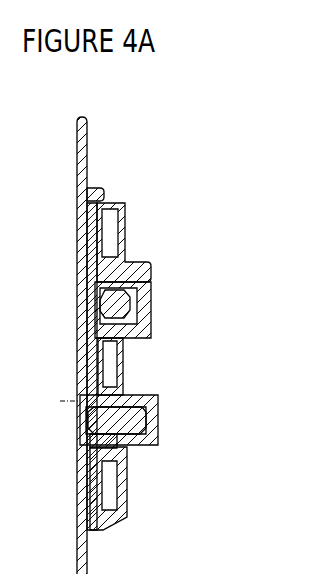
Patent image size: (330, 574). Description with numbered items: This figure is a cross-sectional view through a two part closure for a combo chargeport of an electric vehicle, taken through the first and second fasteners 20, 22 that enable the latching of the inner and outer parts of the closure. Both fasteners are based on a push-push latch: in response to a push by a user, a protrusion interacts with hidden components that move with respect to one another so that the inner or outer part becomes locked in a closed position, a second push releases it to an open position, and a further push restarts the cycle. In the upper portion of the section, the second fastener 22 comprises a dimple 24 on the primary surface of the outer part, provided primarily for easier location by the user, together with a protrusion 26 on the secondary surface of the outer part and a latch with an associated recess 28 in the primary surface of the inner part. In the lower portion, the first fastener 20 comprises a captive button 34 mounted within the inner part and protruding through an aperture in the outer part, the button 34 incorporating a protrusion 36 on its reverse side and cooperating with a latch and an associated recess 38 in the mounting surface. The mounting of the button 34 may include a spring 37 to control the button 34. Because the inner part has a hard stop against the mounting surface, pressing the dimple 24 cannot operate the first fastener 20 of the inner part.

The first fastener 20 is at (190, 445).
The second fastener 22 is at (197, 299).
The dimple 24 is at (145, 272).
The protrusion 26 is at (103, 303).
The recess 28 is at (130, 318).
The captive button 34 is at (153, 402).
The protrusion 36 is at (135, 423).
The spring 37 is at (157, 486).
The recess 38 is at (110, 438).